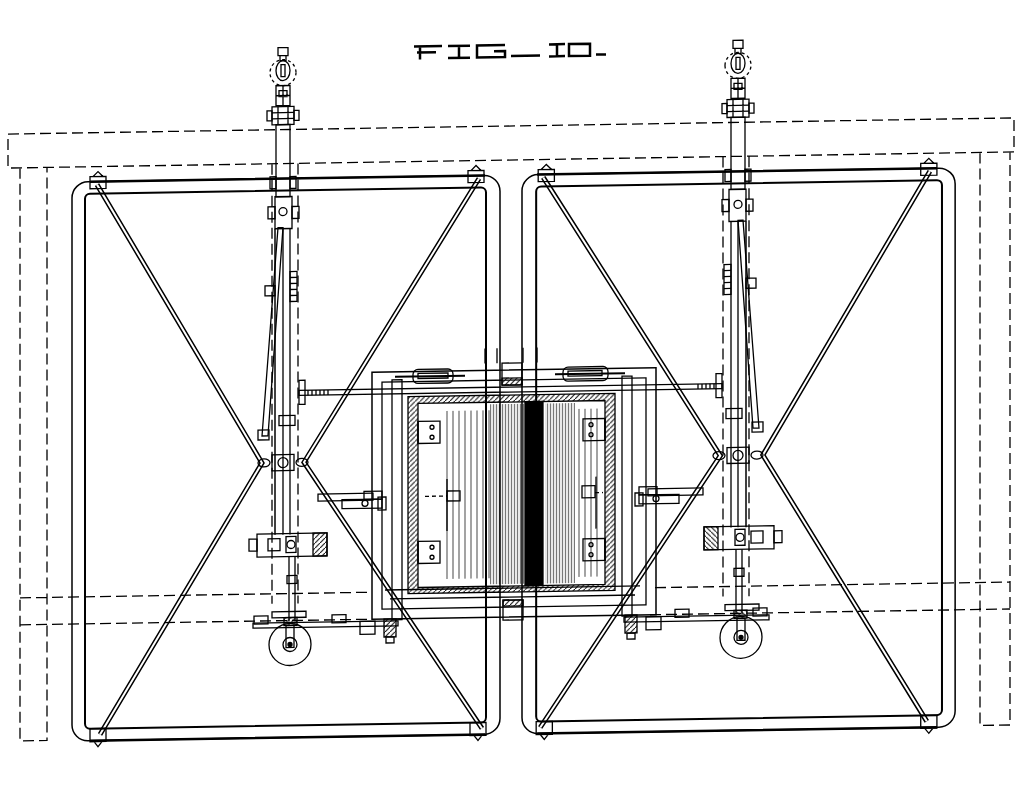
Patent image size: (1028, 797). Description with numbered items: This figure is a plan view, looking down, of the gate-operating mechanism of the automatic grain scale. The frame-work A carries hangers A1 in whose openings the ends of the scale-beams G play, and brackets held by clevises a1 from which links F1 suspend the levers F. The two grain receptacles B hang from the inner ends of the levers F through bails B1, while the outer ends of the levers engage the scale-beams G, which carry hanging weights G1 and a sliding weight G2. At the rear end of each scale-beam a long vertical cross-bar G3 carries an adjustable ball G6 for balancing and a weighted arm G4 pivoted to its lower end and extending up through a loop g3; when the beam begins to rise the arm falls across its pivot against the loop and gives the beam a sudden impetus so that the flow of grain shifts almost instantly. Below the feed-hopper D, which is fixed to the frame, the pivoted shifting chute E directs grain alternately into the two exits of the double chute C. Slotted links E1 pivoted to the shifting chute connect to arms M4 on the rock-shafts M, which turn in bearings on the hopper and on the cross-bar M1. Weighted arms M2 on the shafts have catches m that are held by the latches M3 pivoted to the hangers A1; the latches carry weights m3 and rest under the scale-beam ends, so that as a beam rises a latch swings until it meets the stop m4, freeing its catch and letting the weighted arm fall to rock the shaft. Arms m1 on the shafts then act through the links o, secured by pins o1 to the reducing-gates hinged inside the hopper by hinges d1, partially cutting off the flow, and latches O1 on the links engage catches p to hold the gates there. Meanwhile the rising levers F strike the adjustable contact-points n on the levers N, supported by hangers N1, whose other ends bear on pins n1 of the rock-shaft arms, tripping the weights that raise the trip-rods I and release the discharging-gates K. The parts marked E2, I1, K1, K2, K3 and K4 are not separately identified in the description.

The frame-work A is at (934, 124).
The hangers A1 is at (723, 611).
The receptacles B is at (675, 722).
The bails B1 is at (624, 672).
The double chute C is at (372, 510).
The feed-hopper D is at (418, 470).
The shifting chute E is at (578, 368).
The links E1 is at (600, 368).
The pivot joint E2 is at (750, 212).
The levers F is at (765, 459).
The links F1 is at (756, 410).
The scale-beams G is at (748, 652).
The hanging weights G1 is at (738, 658).
The sliding weight G2 is at (725, 284).
The cross-bar G3 is at (746, 88).
The weighted arm G4 is at (722, 70).
The adjustable ball G6 is at (749, 112).
The loop g3 is at (745, 62).
The trip-rods I is at (736, 577).
The collar I1 is at (294, 418).
The discharging-gates K is at (733, 554).
The bracket pin K1 is at (722, 545).
The bracket plate K2 is at (753, 608).
The bracket K3 is at (780, 531).
The link rod K4 is at (748, 487).
The rock-shafts M is at (622, 616).
The cross-bar M1 is at (702, 387).
The weighted arms M2 is at (636, 638).
The latches M3 is at (732, 626).
The arms M4 is at (615, 368).
The catches m is at (652, 488).
The arms m1 is at (368, 488).
The weights m3 is at (662, 627).
The stop m4 is at (752, 627).
The levers N is at (753, 332).
The hangers N1 is at (757, 285).
The contact-points n is at (748, 205).
The contact-points n1 is at (764, 420).
The latches O1 is at (702, 496).
The links o is at (459, 499).
The pins o1 is at (585, 487).
The catch p is at (700, 497).
The clevises a1 is at (440, 552).
The hinges d1 is at (583, 552).